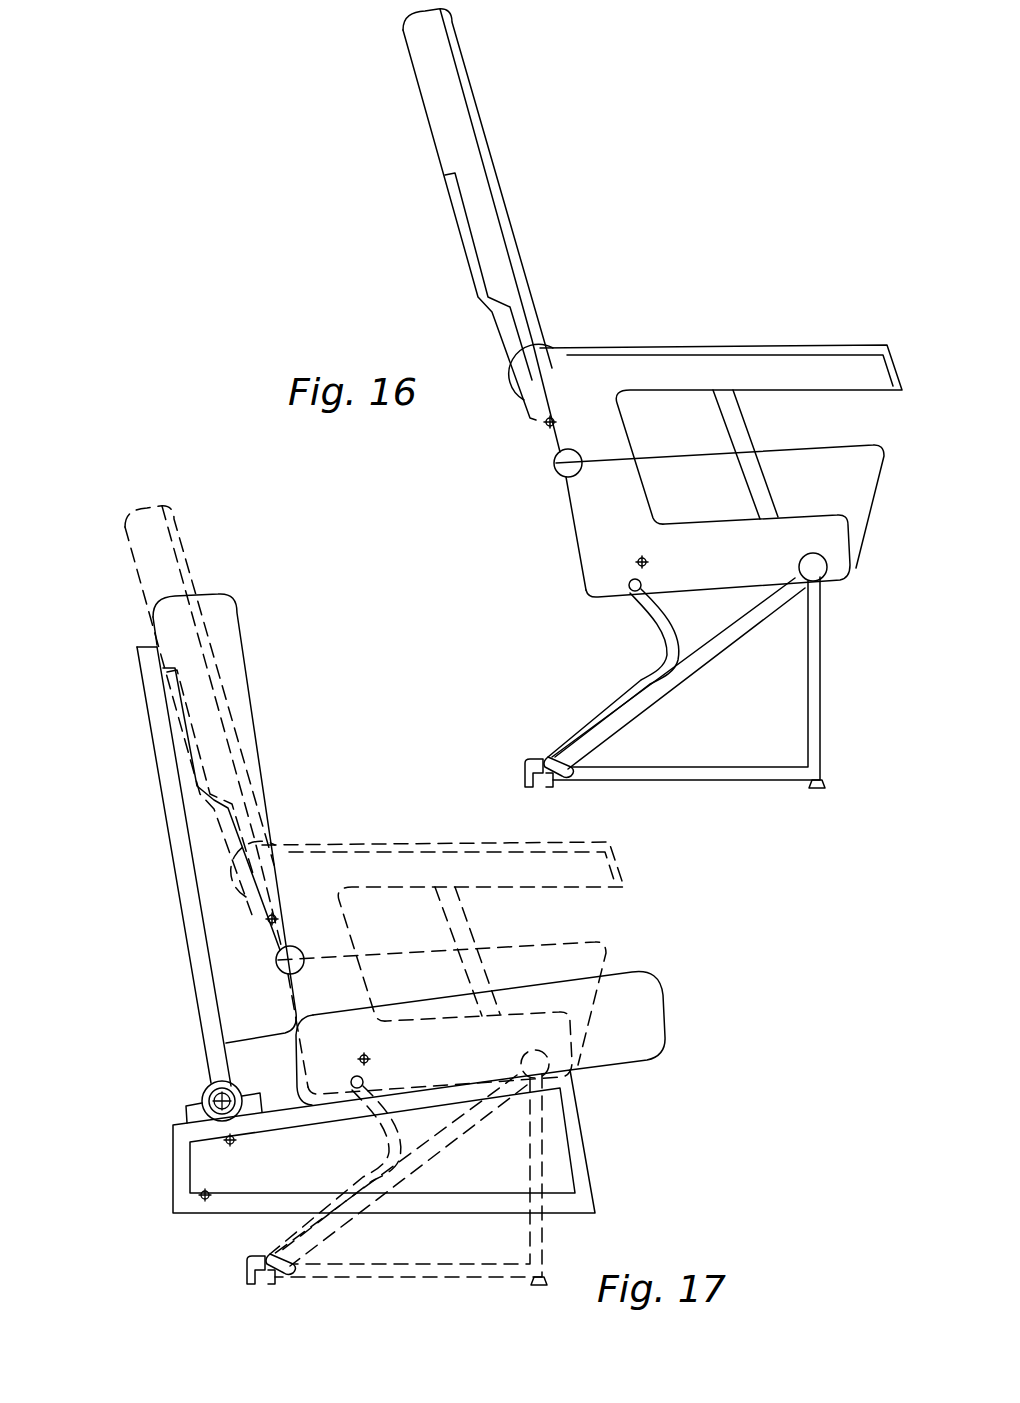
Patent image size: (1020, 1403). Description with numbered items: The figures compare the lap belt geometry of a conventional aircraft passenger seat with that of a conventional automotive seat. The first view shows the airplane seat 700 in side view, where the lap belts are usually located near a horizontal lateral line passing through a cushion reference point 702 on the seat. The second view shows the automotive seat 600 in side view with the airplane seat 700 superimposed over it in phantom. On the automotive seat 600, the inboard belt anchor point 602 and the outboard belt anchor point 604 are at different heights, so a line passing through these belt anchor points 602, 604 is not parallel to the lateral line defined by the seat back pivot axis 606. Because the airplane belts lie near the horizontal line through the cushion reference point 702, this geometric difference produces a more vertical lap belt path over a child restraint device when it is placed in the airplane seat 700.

In FIG. 16, the airplane seat 700 is at (594, 270).
In FIG. 17, the airplane seat 700 is at (340, 772).
In FIG. 16, the cushion reference point 702 is at (560, 475).
In FIG. 17, the cushion reference point 702 is at (283, 968).
In FIG. 17, the automotive seat 600 is at (164, 1163).
In FIG. 17, the inboard belt anchor point 602 is at (205, 1200).
In FIG. 17, the outboard belt anchor point 604 is at (230, 1145).
In FIG. 17, the seat back pivot axis 606 is at (222, 1108).